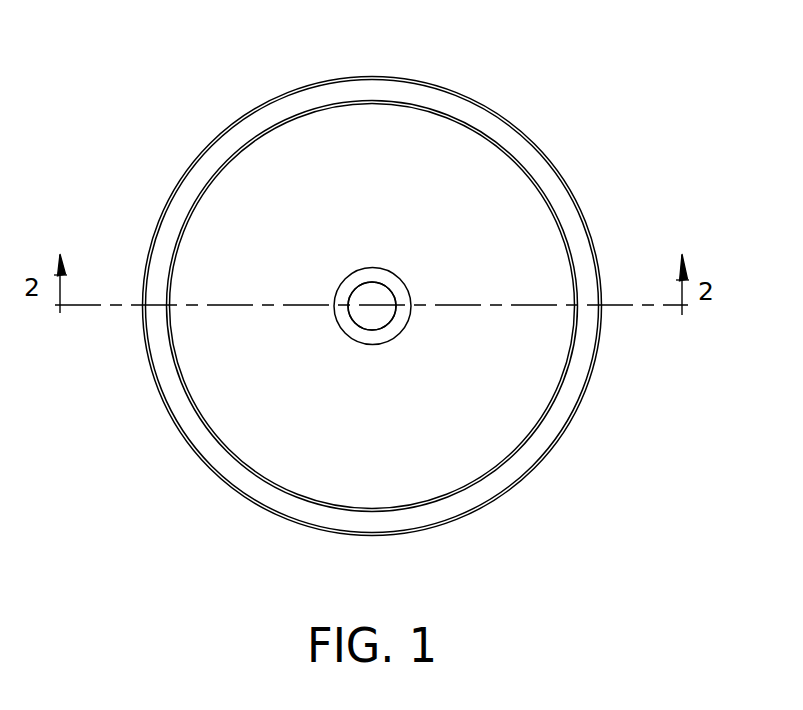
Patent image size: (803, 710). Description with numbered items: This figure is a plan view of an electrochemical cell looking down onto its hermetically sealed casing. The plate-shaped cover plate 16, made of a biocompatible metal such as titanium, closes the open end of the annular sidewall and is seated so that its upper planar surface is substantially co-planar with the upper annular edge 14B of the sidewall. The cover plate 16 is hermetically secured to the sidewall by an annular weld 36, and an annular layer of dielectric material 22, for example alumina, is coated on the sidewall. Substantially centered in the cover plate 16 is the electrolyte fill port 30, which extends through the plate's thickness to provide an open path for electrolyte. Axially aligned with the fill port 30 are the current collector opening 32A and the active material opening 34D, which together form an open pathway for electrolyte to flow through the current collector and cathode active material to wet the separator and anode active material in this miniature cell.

The cover plate 16 is at (371, 123).
The dielectric layer 22 is at (512, 488).
The upper annular edge 14B is at (553, 418).
The annular weld 36 is at (233, 157).
The electrolyte fill port 30 is at (352, 338).
The current collector opening 32A is at (387, 287).
The active material opening 34D is at (372, 306).